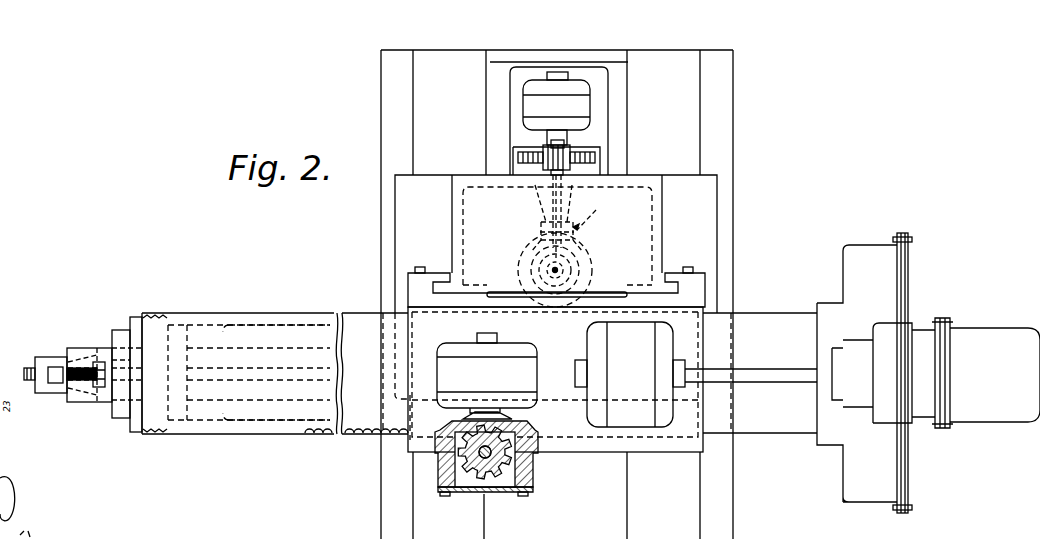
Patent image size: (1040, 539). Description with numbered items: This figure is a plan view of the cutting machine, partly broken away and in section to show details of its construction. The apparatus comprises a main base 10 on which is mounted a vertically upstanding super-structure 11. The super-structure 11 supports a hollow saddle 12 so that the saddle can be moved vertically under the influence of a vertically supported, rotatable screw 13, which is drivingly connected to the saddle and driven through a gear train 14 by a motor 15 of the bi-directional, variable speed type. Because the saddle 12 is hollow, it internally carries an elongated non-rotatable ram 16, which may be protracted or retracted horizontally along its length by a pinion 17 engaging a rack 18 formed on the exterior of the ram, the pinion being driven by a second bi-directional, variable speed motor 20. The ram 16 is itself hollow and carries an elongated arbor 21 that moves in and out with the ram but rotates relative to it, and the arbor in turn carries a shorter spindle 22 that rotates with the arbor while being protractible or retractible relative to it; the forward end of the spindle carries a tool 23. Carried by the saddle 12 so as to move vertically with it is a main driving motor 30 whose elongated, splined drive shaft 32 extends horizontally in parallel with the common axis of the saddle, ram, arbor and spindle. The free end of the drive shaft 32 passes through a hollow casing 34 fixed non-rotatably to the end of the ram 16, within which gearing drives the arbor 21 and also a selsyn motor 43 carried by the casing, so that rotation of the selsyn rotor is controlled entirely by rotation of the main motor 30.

The main base 10 is at (674, 63).
The super-structure 11 is at (664, 217).
The saddle 12 is at (591, 445).
The screw 13 is at (560, 269).
The gear train 14 is at (580, 165).
The motor 15 is at (556, 110).
The ram 16 is at (262, 316).
The pinion 17 is at (470, 482).
The rack 18 is at (452, 432).
The motor 20 is at (487, 376).
The arbor 21 is at (120, 331).
The spindle 22 is at (80, 347).
The tool 23 is at (45, 357).
The main driving motor 30 is at (630, 374).
The drive shaft 32 is at (769, 369).
The casing 34 is at (859, 246).
The motor 43 is at (993, 330).